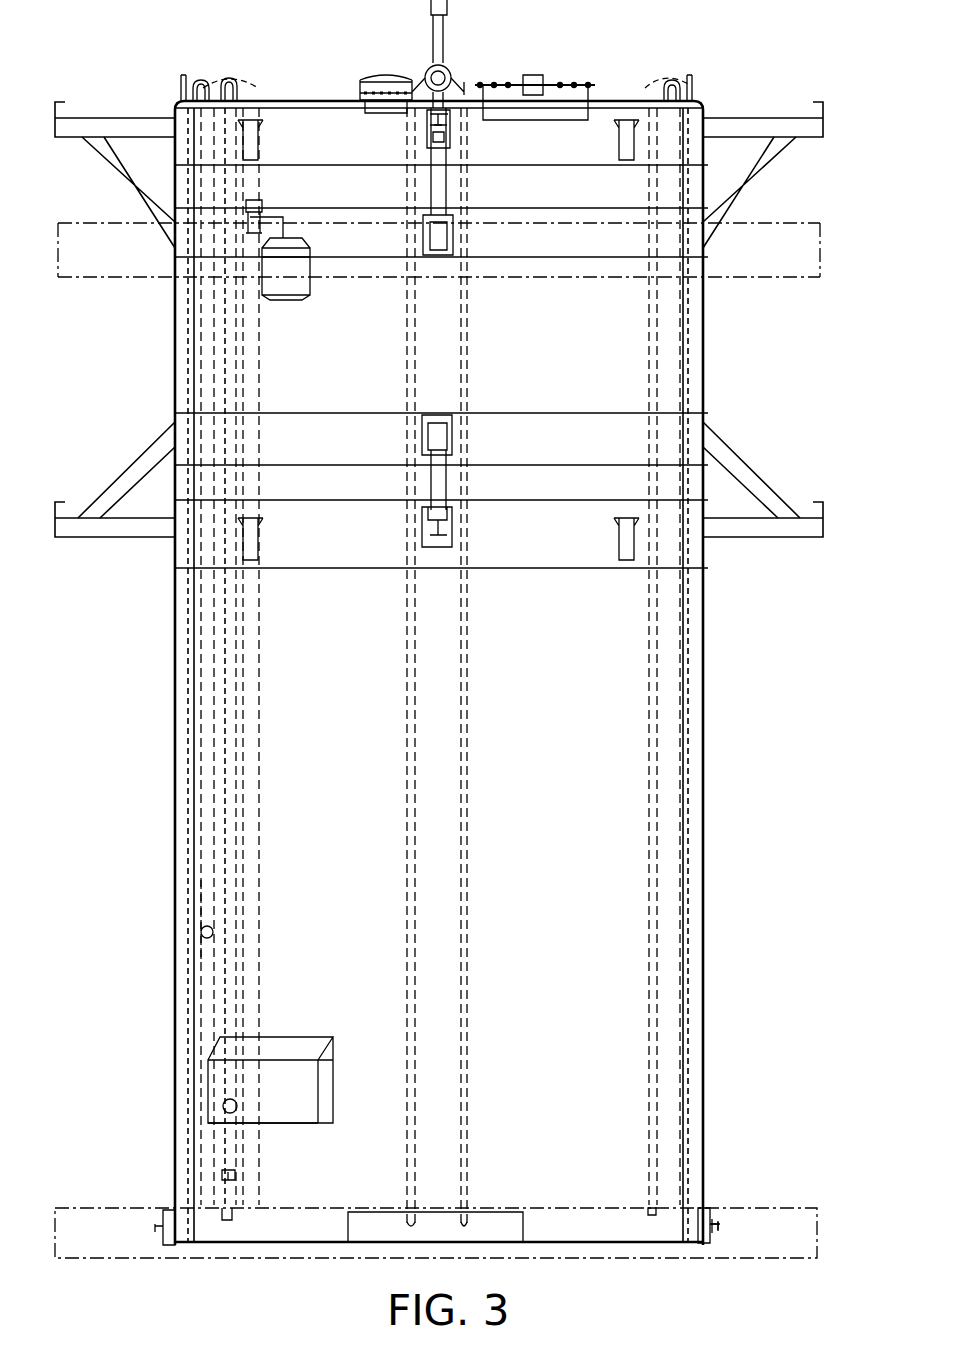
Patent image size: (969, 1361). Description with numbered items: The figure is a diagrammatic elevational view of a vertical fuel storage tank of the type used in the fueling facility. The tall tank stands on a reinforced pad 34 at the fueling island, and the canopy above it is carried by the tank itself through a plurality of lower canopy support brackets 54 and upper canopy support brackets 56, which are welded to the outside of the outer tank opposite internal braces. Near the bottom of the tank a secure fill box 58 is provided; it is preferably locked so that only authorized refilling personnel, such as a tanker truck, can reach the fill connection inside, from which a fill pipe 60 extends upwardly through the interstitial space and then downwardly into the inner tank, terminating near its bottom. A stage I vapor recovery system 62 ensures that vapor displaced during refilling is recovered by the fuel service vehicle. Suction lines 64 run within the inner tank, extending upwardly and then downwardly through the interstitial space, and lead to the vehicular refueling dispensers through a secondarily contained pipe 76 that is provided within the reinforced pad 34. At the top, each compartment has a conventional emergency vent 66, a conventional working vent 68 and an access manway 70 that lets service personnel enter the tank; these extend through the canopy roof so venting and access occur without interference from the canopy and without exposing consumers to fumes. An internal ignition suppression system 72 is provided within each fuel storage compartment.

The reinforced pad 34 is at (802, 1210).
The lower canopy support brackets 54 is at (779, 538).
The upper canopy support brackets 56 is at (752, 118).
The secure fill box 58 is at (218, 1050).
The fill pipe 60 is at (258, 1150).
The stage I vapor recovery system 62 is at (205, 903).
The suction lines 64 is at (688, 1018).
The emergency vent 66 is at (385, 72).
The working vent 68 is at (442, 33).
The access manway 70 is at (592, 80).
The internal ignition suppression system 72 is at (307, 285).
The secondarily contained pipe 76 is at (720, 1227).